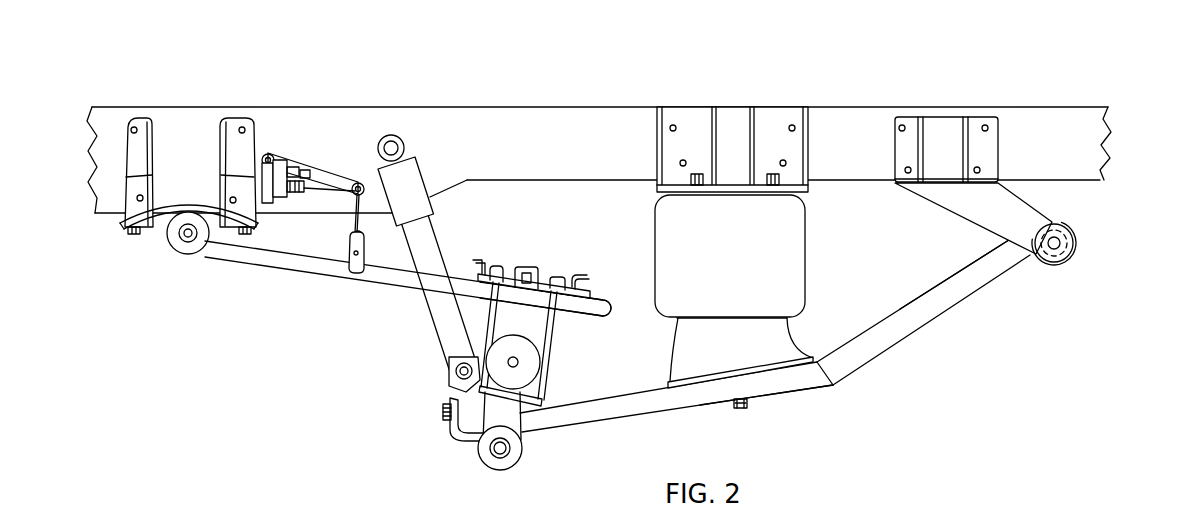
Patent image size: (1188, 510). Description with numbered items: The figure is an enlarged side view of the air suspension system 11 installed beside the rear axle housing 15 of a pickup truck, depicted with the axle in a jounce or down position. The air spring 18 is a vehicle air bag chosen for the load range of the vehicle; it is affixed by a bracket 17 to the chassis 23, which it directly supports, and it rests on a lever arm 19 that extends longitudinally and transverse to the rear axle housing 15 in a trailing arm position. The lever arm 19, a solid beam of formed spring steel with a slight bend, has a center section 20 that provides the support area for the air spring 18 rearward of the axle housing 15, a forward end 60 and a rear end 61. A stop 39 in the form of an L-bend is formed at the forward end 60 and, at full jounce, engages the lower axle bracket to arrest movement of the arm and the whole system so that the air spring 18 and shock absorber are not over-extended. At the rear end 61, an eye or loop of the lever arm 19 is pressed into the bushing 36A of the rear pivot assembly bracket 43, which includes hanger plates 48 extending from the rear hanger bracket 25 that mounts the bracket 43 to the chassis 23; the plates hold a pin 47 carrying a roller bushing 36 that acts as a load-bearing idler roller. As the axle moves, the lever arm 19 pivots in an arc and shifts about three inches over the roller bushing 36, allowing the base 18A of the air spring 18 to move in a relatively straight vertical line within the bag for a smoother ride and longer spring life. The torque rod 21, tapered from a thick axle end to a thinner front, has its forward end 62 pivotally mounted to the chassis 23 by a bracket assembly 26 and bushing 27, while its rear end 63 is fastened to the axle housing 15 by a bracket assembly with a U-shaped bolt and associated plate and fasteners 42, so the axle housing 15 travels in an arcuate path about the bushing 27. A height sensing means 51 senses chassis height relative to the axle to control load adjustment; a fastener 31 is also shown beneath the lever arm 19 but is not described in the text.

The air suspension system 11 is at (875, 353).
The rear axle housing 15 is at (530, 363).
The bracket 17 is at (808, 145).
The air spring 18 is at (802, 245).
The base of the air spring 18A is at (807, 322).
The lever arm 19 is at (917, 323).
The center section 20 is at (788, 392).
The torque rod 21 is at (393, 280).
The chassis 23 is at (553, 106).
The rear hanger bracket 25 is at (1000, 145).
The bracket assembly 26 is at (152, 163).
The bushing 27 is at (187, 252).
The bolt 31 is at (752, 407).
The roller bushing 36 is at (518, 447).
The bushing 36A is at (1075, 255).
The stop 39 is at (455, 422).
The plate and fasteners 42 is at (490, 263).
The rear pivot assembly bracket 43 is at (1077, 228).
The pin 47 is at (1053, 258).
The hanger plates 48 is at (972, 223).
The height sensing means 51 is at (277, 162).
The forward end of the lever arm 60 is at (587, 397).
The rear end of the lever arm 61 is at (970, 288).
The forward end of the torque rod 62 is at (274, 256).
The rear end of the torque rod 63 is at (593, 297).